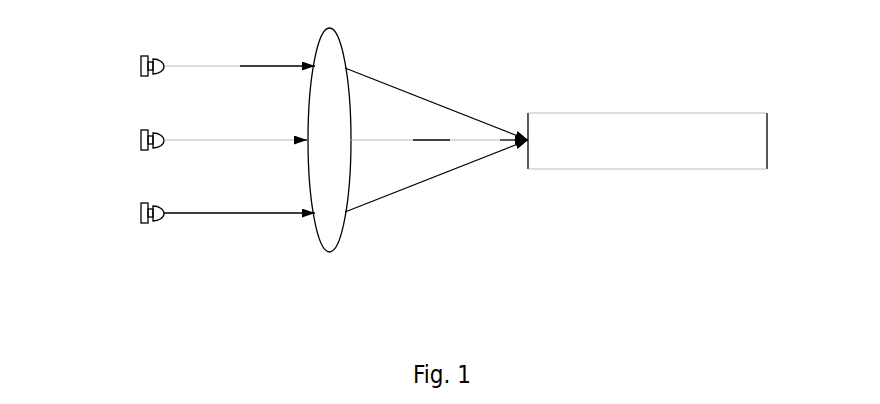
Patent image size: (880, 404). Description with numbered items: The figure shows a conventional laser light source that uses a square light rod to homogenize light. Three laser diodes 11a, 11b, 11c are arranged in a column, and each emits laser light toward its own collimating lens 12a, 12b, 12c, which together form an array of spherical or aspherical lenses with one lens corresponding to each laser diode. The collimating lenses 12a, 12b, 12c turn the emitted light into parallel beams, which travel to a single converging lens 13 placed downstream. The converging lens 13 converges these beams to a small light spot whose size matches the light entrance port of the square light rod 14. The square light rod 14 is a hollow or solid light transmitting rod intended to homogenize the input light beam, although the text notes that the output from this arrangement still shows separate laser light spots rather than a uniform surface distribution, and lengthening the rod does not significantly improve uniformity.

The laser diode 11a is at (141, 61).
The laser diode 11b is at (141, 135).
The laser diode 11c is at (141, 210).
The collimating lens 12a is at (158, 58).
The collimating lens 12b is at (158, 132).
The collimating lens 12c is at (158, 205).
The converging lens 13 is at (313, 63).
The square light rod 14 is at (583, 110).